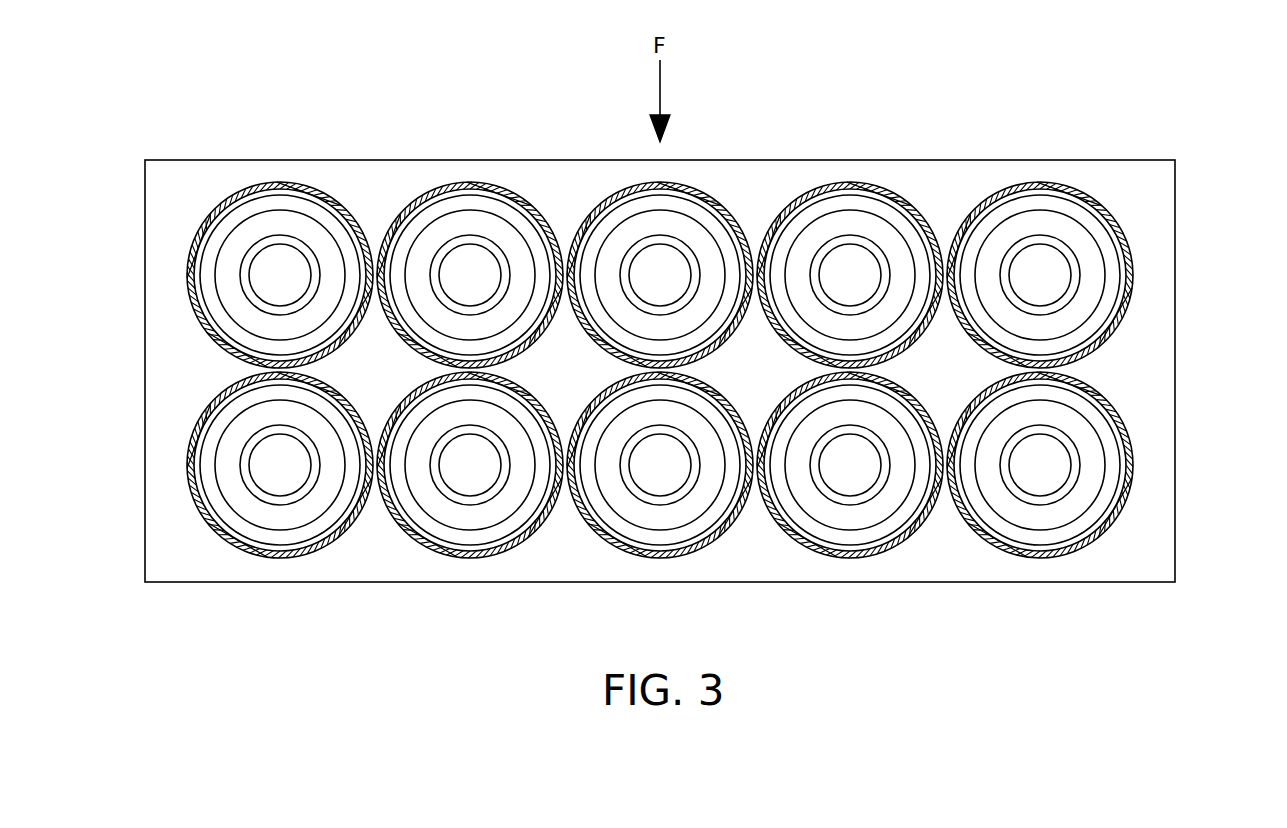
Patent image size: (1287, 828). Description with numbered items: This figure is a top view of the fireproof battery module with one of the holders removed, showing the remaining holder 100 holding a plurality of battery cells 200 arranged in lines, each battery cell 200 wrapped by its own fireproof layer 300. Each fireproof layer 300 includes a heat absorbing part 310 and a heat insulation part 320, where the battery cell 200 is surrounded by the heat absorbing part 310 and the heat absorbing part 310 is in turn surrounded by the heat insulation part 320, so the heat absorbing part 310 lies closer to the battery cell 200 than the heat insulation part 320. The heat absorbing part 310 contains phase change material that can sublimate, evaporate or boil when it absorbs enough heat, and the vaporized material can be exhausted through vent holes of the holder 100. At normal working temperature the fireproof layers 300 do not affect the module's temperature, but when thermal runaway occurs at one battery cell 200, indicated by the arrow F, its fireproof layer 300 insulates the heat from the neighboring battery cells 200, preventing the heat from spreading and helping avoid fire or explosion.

The holder 100 is at (1145, 215).
The battery cell 200 is at (241, 210).
The fireproof layer 300 is at (298, 215).
The heat absorbing part 310 is at (280, 232).
The heat insulation part 320 is at (291, 236).